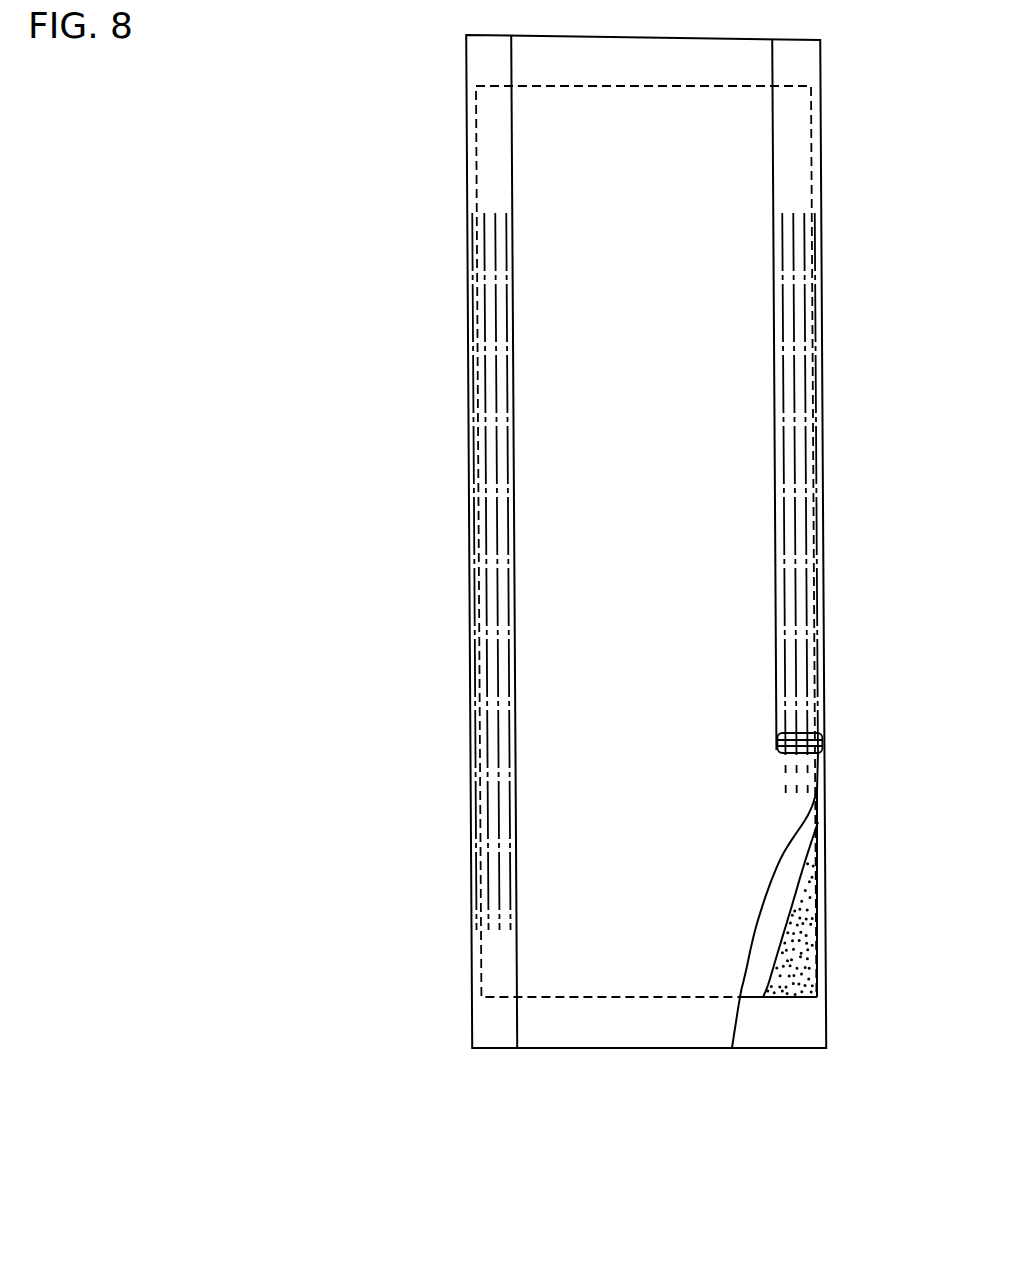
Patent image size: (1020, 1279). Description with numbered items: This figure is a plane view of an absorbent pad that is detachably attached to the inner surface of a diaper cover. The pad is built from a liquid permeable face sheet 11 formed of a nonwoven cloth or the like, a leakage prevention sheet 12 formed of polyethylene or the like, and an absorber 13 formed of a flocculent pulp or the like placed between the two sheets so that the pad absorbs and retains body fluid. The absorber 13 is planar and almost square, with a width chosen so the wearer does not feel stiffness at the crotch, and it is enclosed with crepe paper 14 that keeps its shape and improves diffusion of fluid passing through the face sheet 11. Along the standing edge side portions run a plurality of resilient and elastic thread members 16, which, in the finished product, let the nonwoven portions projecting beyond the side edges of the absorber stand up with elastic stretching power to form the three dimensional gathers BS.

The liquid permeable face sheet 11 is at (715, 804).
The leakage prevention sheet 12 is at (772, 1017).
The absorber 13 is at (793, 947).
The crepe paper 14 is at (793, 860).
The resilient and elastic thread members 16 is at (507, 345).
The three dimensional gathers BS is at (774, 577).